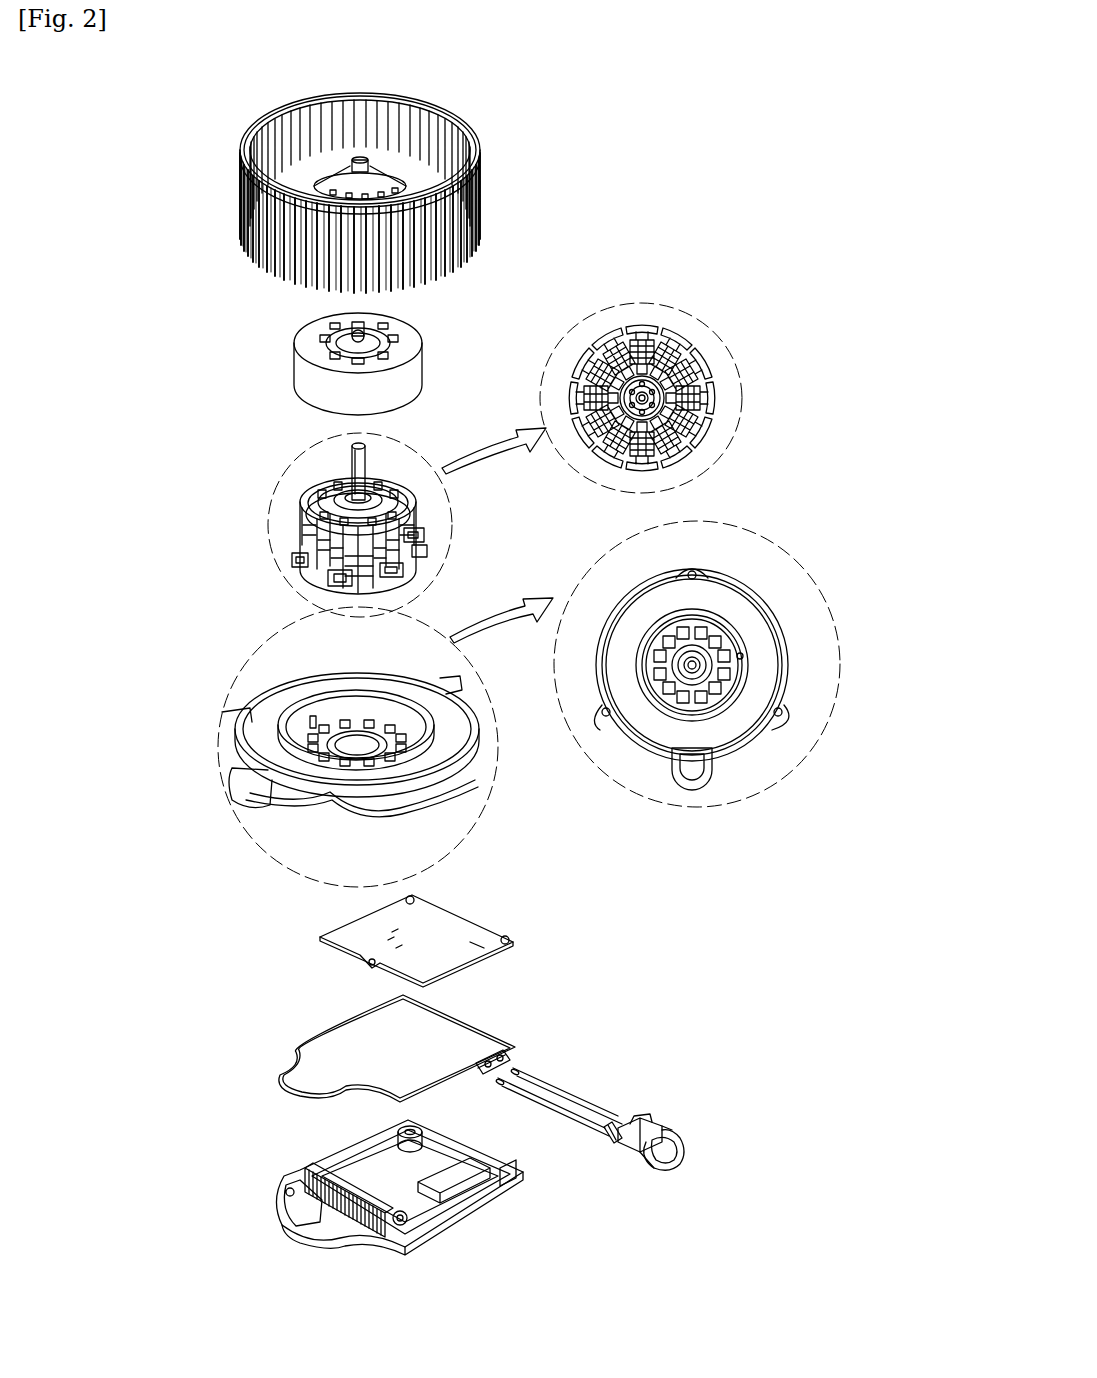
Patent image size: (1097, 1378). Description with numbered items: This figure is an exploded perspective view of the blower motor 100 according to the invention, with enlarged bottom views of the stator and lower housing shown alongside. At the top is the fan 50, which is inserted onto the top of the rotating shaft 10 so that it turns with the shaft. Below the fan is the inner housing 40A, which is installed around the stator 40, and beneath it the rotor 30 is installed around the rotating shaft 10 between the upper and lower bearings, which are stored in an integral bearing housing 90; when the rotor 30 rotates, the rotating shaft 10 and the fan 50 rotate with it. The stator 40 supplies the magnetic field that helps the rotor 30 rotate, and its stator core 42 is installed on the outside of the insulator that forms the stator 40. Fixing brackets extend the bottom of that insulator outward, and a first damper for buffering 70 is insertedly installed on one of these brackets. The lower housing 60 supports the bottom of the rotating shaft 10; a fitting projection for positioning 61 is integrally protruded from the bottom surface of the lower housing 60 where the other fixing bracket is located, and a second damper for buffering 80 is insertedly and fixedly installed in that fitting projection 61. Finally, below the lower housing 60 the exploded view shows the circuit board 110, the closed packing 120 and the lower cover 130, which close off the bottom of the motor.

The rotating shaft 10 is at (352, 466).
The rotor 30 is at (306, 496).
The stator 40 is at (481, 443).
The inner housing 40A is at (302, 371).
The stator core 42 is at (430, 556).
The fan 50 is at (486, 111).
The lower housing 60 is at (510, 702).
The fitting projection for positioning 61 is at (310, 720).
The first damper for buffering 70 is at (284, 554).
The second damper for buffering 80 is at (330, 580).
The bearing housing 90 is at (400, 489).
The motor 100 is at (170, 382).
The circuit board 110 is at (352, 925).
The closed packing 120 is at (472, 1020).
The lower cover 130 is at (462, 1202).